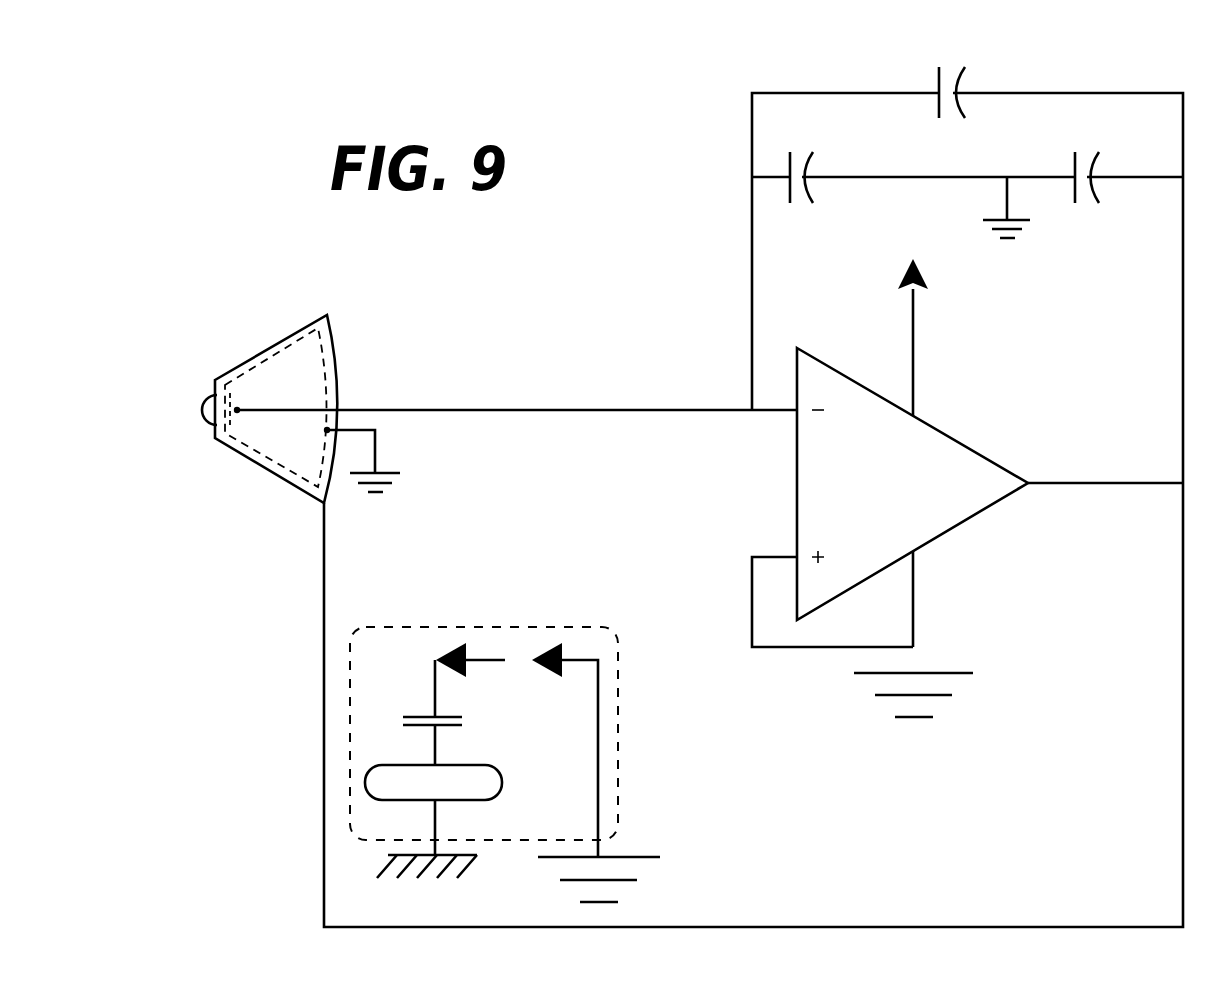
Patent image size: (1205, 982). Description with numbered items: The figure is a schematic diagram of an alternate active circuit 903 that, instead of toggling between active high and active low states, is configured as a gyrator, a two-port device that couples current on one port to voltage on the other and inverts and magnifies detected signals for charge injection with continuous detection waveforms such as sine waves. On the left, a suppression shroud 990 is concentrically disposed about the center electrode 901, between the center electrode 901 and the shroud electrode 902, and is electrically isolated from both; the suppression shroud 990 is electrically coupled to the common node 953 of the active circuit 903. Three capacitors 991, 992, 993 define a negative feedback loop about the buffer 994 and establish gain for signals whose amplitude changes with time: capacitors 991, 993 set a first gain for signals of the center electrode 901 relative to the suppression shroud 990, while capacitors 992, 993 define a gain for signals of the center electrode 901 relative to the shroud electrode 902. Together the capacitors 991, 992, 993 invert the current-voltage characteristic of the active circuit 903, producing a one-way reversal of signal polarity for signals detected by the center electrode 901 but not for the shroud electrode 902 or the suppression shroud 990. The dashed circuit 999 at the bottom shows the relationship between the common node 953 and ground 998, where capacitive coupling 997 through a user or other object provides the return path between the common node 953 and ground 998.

The center electrode 901 is at (200, 412).
The shroud electrode 902 is at (270, 347).
The active circuit 903 is at (698, 362).
The suppression shroud 990 is at (257, 457).
The common node 953 is at (400, 473).
The capacitor 991 is at (790, 203).
The capacitor 992 is at (1075, 203).
The capacitor 993 is at (942, 70).
The buffer 994 is at (938, 508).
The capacitive coupling 997 is at (388, 733).
The ground 998 is at (477, 857).
The circuit 999 is at (630, 738).